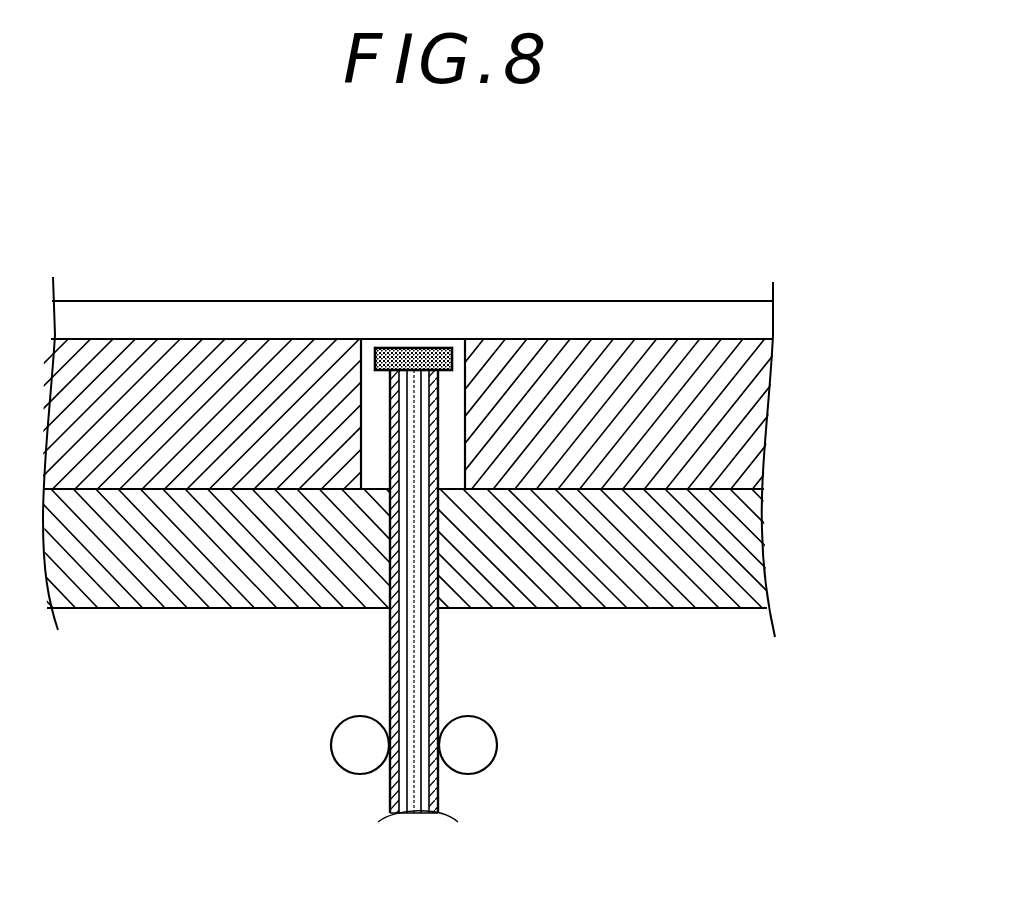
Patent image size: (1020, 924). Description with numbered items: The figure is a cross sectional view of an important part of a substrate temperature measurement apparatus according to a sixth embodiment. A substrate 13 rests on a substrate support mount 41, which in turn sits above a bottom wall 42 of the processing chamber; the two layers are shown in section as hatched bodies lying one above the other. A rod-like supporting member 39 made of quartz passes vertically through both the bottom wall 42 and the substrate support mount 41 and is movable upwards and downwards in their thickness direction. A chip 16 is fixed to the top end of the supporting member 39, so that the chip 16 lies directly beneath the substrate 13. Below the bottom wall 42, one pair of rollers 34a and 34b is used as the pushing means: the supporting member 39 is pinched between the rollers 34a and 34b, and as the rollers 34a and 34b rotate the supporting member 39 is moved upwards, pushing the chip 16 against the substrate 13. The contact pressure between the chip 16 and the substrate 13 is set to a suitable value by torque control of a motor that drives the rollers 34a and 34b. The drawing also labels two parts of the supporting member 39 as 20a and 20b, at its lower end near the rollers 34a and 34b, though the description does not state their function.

The substrate 13 is at (607, 323).
The chip 16 is at (398, 348).
The substrate support mount 41 is at (745, 398).
The bottom wall 42 is at (748, 555).
The supporting member 39 is at (438, 652).
The first conductor strip 20a is at (393, 800).
The second conductor strip 20b is at (442, 797).
The roller 34a is at (343, 740).
The roller 34b is at (483, 748).